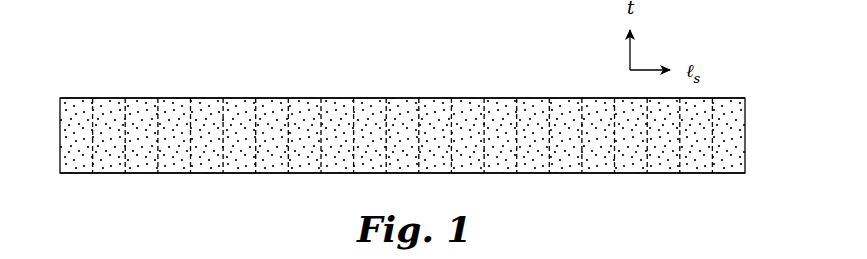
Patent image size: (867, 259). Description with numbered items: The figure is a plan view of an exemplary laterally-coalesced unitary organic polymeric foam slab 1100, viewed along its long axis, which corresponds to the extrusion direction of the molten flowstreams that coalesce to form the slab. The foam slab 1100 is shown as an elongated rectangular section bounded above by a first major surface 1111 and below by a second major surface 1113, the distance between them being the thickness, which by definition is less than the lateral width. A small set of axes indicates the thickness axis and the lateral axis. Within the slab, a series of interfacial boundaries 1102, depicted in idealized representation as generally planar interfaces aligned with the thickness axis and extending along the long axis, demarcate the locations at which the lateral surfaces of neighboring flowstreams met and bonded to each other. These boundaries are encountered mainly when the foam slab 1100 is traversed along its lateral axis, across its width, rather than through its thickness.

The foam slab 1100 is at (128, 66).
The first major surface 1111 is at (305, 98).
The second major surface 1113 is at (275, 174).
The interfacial boundaries 1102 is at (515, 122).